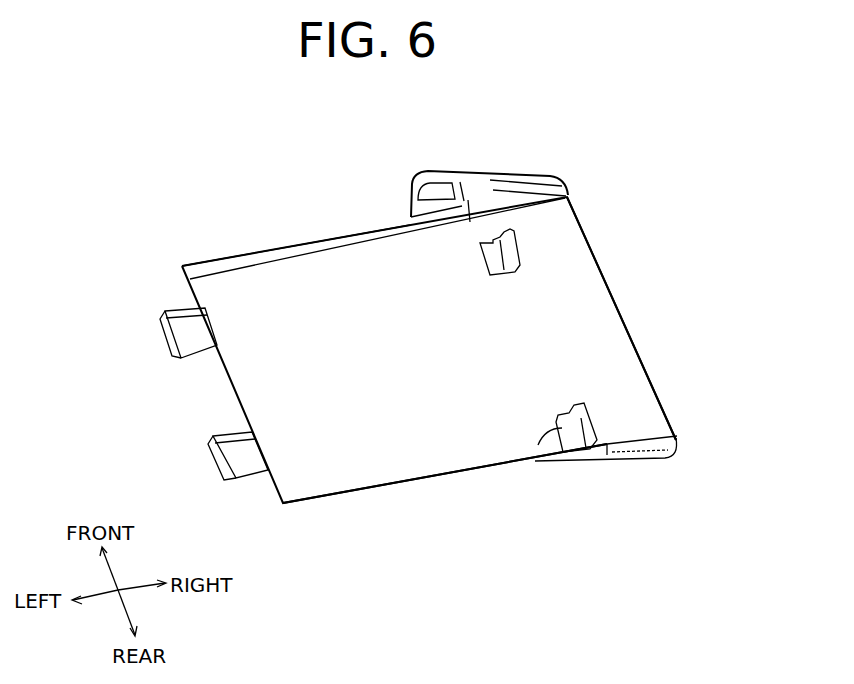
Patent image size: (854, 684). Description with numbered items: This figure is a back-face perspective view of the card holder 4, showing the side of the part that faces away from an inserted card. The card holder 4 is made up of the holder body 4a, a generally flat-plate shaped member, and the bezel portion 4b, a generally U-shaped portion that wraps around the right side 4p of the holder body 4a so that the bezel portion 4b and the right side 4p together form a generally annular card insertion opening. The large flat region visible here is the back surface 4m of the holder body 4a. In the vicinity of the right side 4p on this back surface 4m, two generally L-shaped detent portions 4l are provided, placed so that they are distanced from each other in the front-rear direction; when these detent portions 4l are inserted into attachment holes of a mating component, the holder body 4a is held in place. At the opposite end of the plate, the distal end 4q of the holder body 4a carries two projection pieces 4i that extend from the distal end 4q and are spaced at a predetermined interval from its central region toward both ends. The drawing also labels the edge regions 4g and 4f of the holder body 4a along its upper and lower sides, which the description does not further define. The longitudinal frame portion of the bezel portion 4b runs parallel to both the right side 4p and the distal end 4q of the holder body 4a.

The card holder 4 is at (402, 347).
The holder body 4a is at (320, 233).
The bezel portion 4b is at (472, 165).
The lower edge portion 4f is at (386, 485).
The upper edge 4g is at (255, 258).
The projection pieces 4i is at (178, 306).
The detent portions 4l is at (538, 445).
The back surface 4m is at (424, 373).
The right side 4p is at (623, 310).
The distal end 4q is at (215, 388).